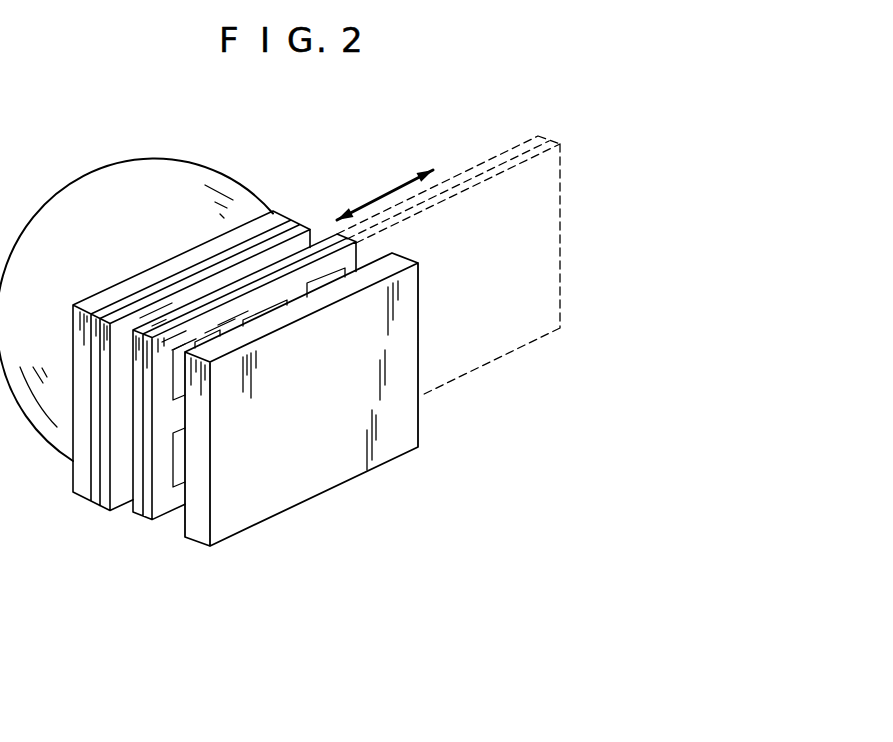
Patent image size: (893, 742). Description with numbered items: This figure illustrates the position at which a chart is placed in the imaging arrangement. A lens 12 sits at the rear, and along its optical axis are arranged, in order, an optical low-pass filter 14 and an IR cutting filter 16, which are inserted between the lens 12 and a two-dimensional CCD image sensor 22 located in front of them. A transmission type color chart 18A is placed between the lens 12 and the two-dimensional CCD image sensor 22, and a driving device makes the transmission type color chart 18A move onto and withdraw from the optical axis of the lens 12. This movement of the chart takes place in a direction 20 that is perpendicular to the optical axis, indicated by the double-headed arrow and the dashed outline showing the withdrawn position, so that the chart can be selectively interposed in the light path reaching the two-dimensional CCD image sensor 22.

The lens 12 is at (183, 180).
The optical low-pass filter 14 is at (83, 483).
The IR cutting filter 16 is at (100, 497).
The transmission type color chart 18A is at (160, 503).
The direction 20 is at (384, 192).
The two-dimensional CCD image sensor 22 is at (323, 453).